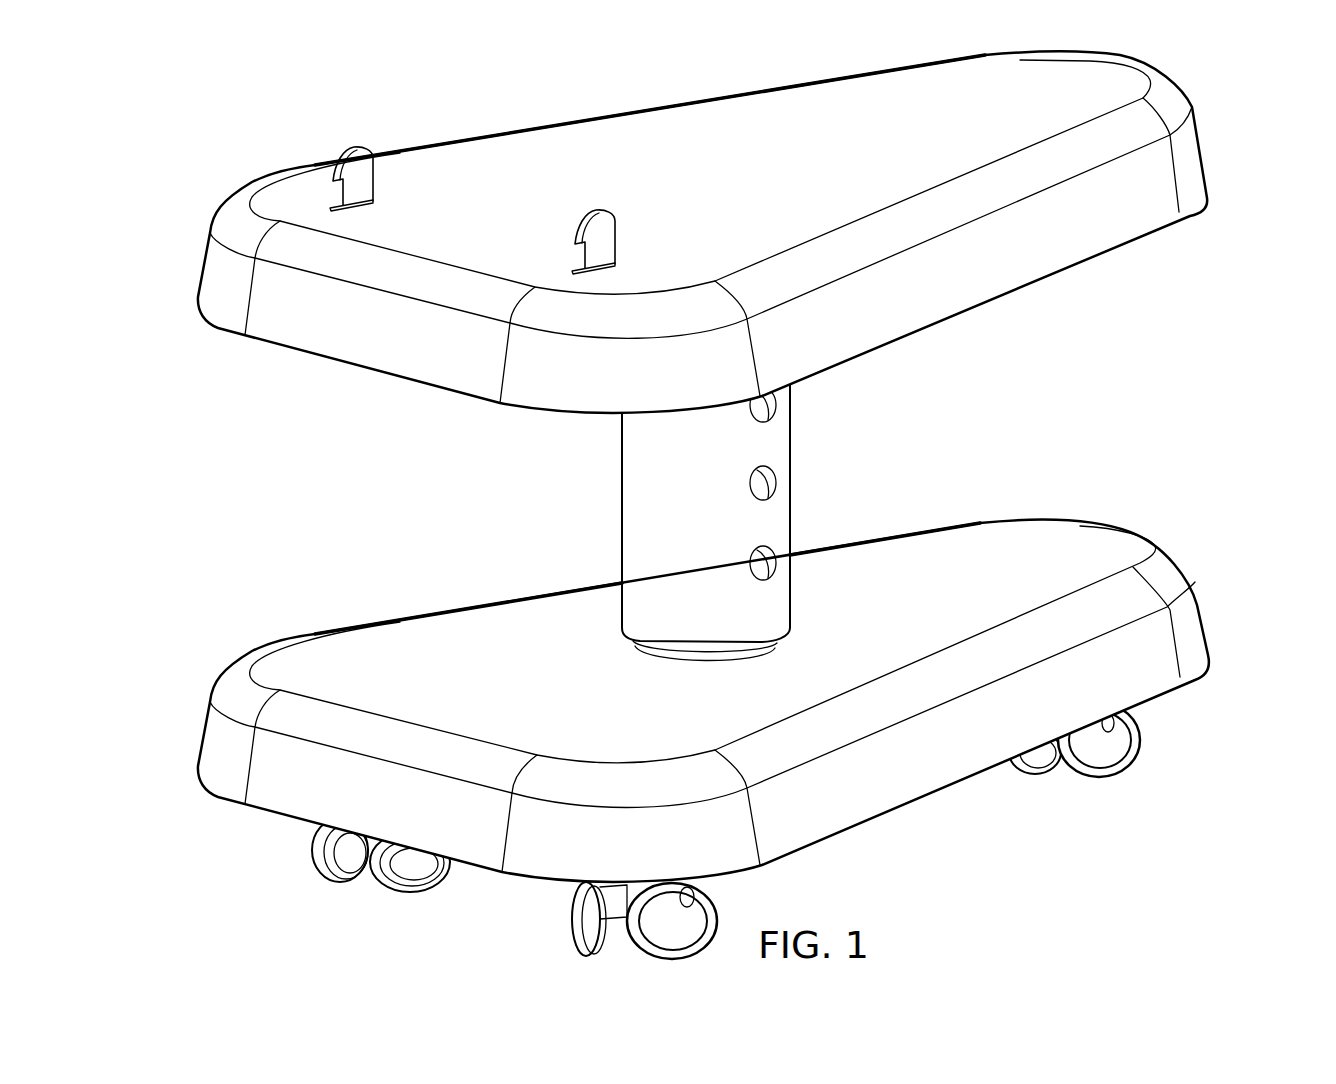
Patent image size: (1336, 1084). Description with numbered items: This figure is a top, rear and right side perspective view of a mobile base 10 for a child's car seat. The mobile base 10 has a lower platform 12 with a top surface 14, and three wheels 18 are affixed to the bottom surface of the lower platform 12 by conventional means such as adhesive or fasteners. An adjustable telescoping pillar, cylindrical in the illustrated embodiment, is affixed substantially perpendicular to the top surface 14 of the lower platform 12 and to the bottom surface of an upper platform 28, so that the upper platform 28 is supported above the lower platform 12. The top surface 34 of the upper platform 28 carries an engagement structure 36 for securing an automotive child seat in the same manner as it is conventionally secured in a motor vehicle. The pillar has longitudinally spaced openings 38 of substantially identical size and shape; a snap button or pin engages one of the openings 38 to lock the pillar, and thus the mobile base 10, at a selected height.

The mobile base 10 is at (232, 131).
The lower platform 12 is at (220, 660).
The top surface 14 is at (985, 543).
The wheels 18 is at (322, 870).
The upper platform 28 is at (1192, 94).
The top surface 34 is at (706, 126).
The engagement structure 36 is at (352, 152).
The openings 38 is at (780, 420).